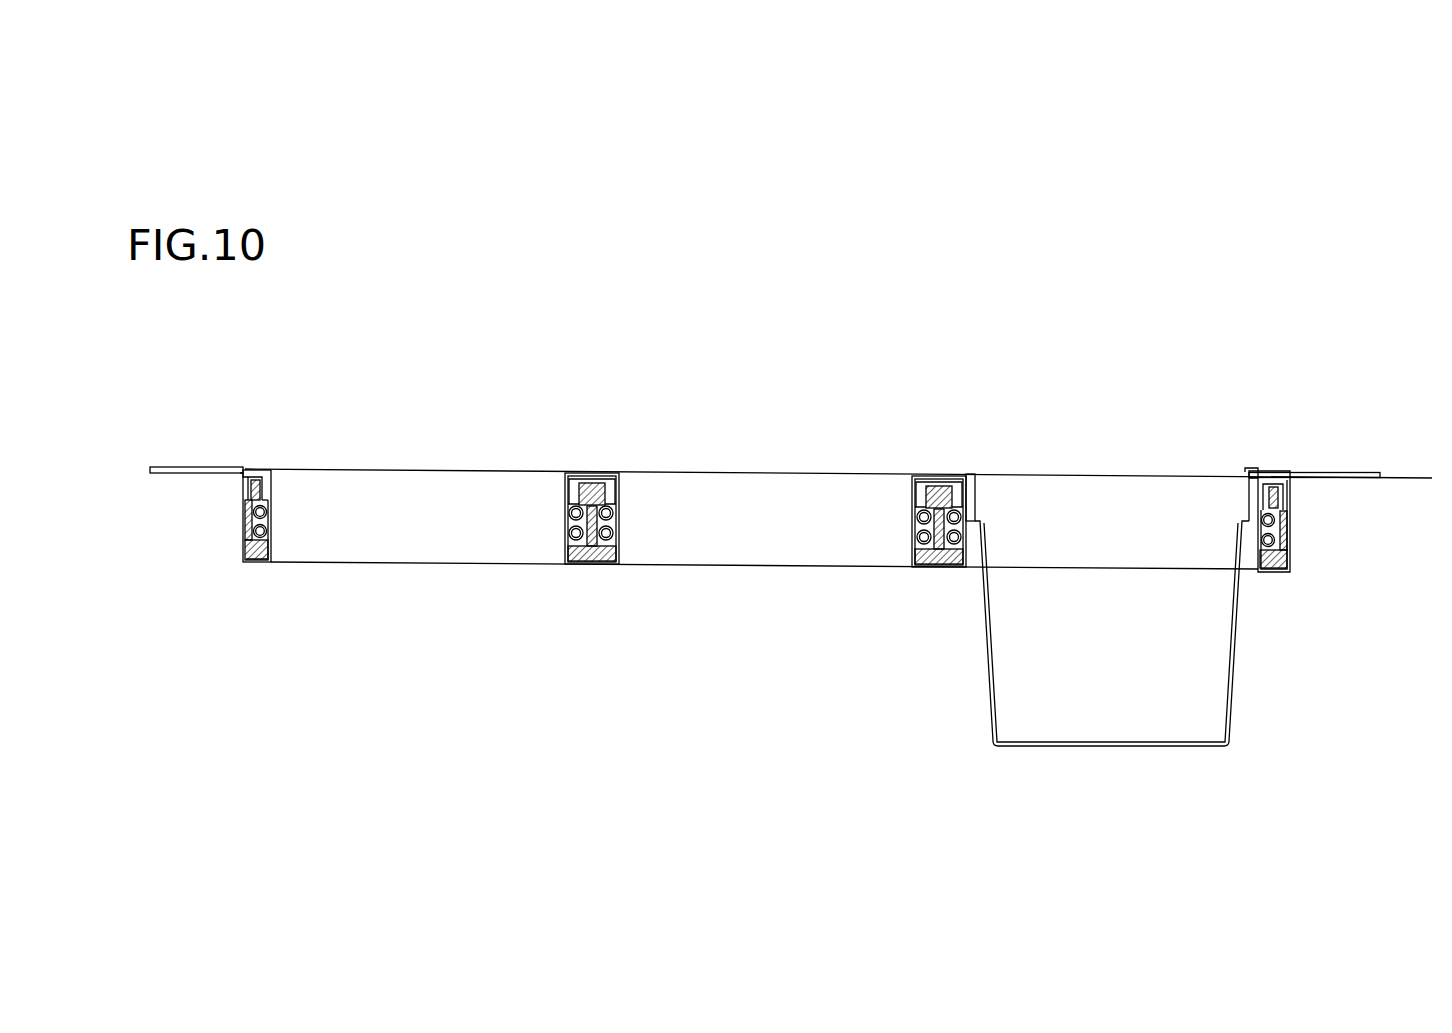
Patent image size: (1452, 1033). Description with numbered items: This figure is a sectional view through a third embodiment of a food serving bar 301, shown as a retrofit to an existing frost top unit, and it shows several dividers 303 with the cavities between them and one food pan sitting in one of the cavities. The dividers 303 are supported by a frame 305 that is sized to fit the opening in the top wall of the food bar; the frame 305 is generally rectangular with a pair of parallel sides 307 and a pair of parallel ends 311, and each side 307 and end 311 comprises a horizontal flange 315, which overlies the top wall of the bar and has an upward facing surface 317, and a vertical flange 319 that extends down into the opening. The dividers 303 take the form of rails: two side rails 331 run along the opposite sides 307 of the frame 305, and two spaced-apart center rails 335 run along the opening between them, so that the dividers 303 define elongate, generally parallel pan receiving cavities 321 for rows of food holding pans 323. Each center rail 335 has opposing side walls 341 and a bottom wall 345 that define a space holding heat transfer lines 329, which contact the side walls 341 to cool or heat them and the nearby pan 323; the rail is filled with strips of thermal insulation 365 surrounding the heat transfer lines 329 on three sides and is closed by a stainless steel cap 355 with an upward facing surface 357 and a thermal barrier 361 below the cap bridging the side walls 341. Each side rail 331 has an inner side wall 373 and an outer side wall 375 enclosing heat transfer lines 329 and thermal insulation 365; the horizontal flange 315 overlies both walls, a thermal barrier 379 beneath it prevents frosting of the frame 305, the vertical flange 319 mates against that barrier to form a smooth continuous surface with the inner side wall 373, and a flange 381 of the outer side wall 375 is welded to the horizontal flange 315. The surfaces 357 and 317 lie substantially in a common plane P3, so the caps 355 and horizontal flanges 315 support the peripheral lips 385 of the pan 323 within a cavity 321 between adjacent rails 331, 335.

The food serving bar 301 is at (1080, 282).
The divider 303 is at (239, 570).
The frame 305 is at (1358, 468).
The side 307 is at (165, 467).
The end 311 is at (774, 472).
The horizontal flange 315 is at (195, 467).
The upward facing surface 317 is at (180, 467).
The vertical flange 319 is at (278, 480).
The pan receiving cavity 321 is at (422, 507).
The food holding pan 323 is at (990, 700).
The heat transfer line 329 is at (268, 532).
The side rail 331 is at (248, 520).
The center rail 335 is at (580, 566).
The side wall 341 is at (620, 540).
The bottom wall 345 is at (586, 566).
The cap 355 is at (555, 489).
The upward facing surface 357 is at (584, 479).
The thermal barrier 361 is at (568, 496).
The thermal insulation 365 is at (247, 505).
The inner side wall 373 is at (270, 537).
The outer side wall 375 is at (242, 565).
The thermal barrier 379 is at (256, 479).
The flange 381 is at (236, 475).
The peripheral lip 385 is at (968, 474).
The plane P3 is at (1410, 477).